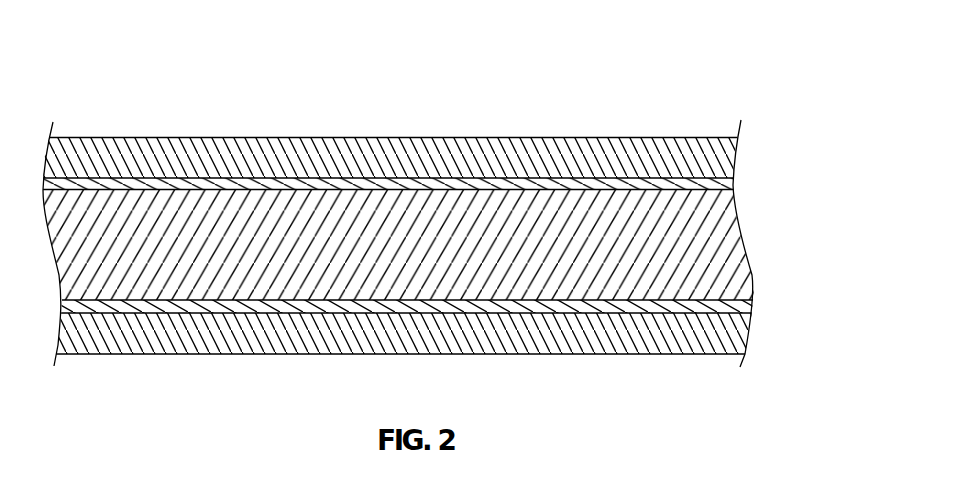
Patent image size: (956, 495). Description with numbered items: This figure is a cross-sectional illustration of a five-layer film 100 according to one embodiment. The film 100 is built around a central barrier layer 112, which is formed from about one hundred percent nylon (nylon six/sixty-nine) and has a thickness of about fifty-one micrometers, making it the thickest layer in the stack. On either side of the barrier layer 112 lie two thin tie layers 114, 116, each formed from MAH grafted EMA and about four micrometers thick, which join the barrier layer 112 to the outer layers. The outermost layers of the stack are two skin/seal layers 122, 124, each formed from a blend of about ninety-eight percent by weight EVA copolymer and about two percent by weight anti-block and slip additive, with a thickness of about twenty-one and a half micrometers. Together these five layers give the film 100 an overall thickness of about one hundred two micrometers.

The five-layer film 100 is at (432, 209).
The barrier layer 112 is at (732, 218).
The tie layer 114 is at (728, 185).
The tie layer 116 is at (740, 307).
The skin/seal layer 122 is at (725, 157).
The skin/seal layer 124 is at (737, 338).